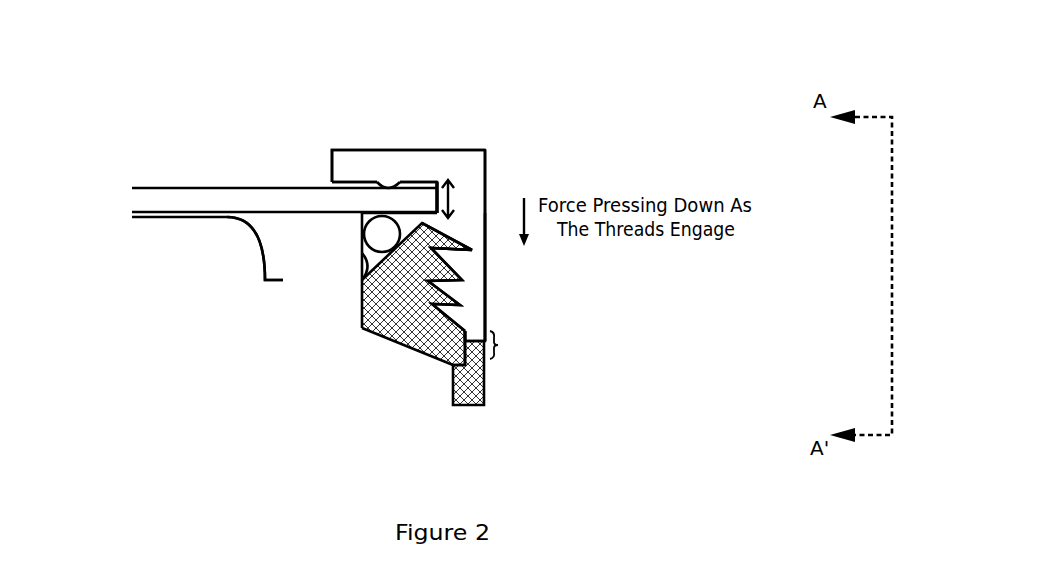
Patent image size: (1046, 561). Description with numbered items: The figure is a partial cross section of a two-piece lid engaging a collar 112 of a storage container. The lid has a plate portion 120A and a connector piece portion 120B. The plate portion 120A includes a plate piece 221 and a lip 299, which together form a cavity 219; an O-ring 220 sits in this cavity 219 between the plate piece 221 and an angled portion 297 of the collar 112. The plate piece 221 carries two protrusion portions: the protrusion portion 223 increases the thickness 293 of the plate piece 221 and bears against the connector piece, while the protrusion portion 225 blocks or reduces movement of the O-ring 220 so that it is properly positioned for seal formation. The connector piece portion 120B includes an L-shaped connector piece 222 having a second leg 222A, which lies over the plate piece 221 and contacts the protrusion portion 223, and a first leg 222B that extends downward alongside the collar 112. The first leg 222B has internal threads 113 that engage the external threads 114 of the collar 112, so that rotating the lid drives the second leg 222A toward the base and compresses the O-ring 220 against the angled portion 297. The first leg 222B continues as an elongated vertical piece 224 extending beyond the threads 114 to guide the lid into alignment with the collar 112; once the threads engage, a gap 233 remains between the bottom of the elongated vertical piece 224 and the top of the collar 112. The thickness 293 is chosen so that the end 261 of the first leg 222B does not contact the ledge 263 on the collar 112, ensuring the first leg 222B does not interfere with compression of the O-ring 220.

The plate portion 120A is at (153, 162).
The connector piece portion 120B is at (476, 118).
The plate piece 221 is at (327, 205).
The cavity 219 is at (362, 212).
The O-ring 220 is at (383, 235).
The lip 299 is at (297, 260).
The protrusion portion 225 is at (363, 259).
The external threads 114 is at (432, 296).
The internal threads 113 is at (450, 303).
The collar 112 is at (447, 365).
The ledge 263 is at (480, 365).
The connector piece 222 is at (472, 168).
The second leg 222A is at (353, 162).
The first leg 222B is at (468, 293).
The protrusion portion 223 is at (391, 182).
The elongated vertical piece 224 is at (476, 346).
The thickness 293 is at (450, 205).
The angled portion 297 is at (445, 256).
The gap 233 is at (497, 353).
The end 261 is at (470, 340).